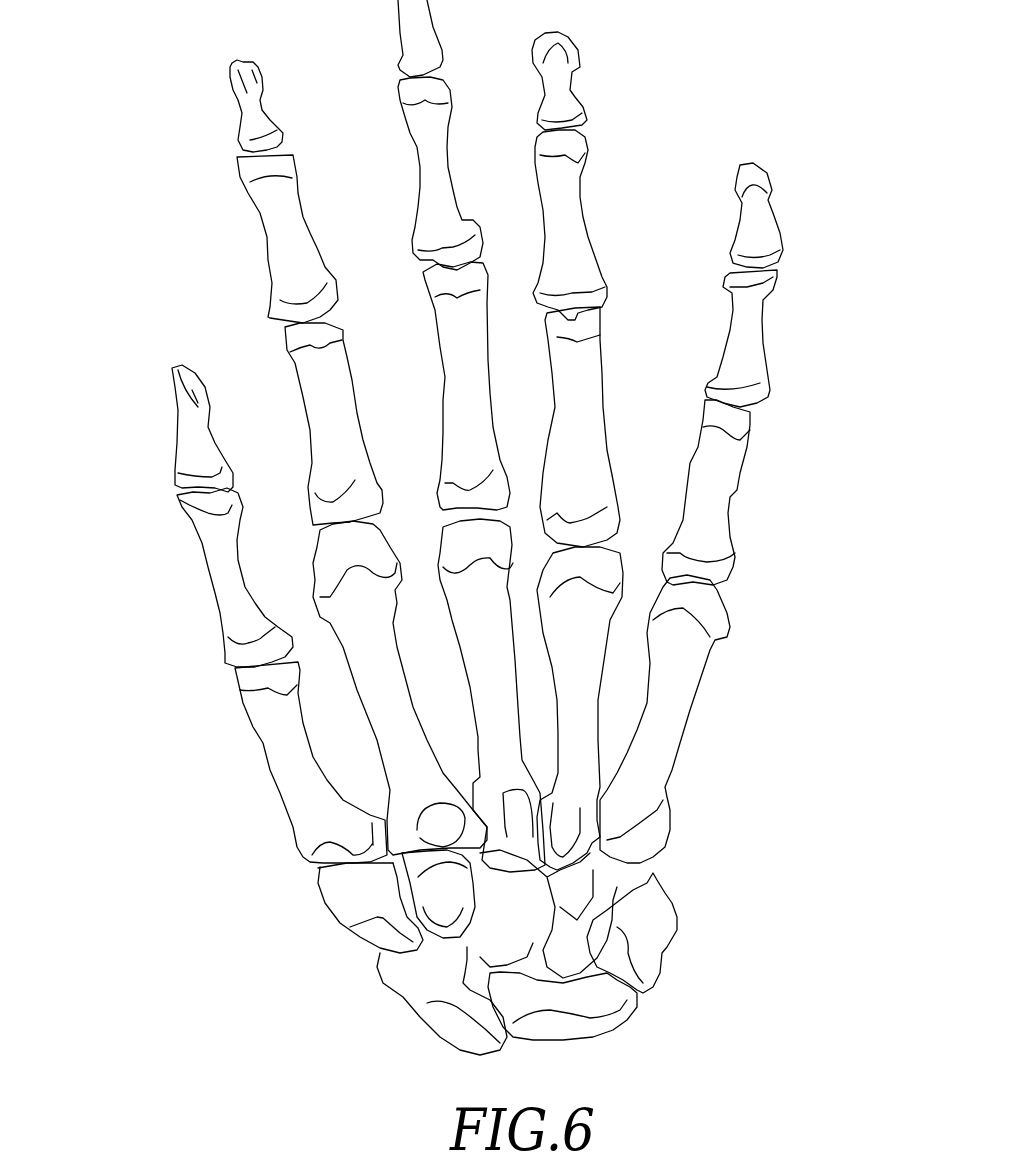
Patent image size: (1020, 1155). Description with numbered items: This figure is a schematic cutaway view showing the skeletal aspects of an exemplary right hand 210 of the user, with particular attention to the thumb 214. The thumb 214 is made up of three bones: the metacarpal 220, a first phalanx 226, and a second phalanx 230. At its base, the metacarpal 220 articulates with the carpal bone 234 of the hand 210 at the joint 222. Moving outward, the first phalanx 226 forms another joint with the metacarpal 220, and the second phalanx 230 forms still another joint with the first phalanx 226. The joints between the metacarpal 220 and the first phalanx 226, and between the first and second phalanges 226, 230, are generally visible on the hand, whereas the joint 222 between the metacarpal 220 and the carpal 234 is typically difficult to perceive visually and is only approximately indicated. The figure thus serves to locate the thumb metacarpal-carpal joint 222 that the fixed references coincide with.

The right hand 210 is at (780, 476).
The thumb 214 is at (221, 592).
The second phalanx 230 is at (177, 467).
The first phalanx 226 is at (207, 587).
The metacarpal 220 is at (267, 762).
The joint 222 is at (317, 872).
The carpal bone 234 is at (343, 930).